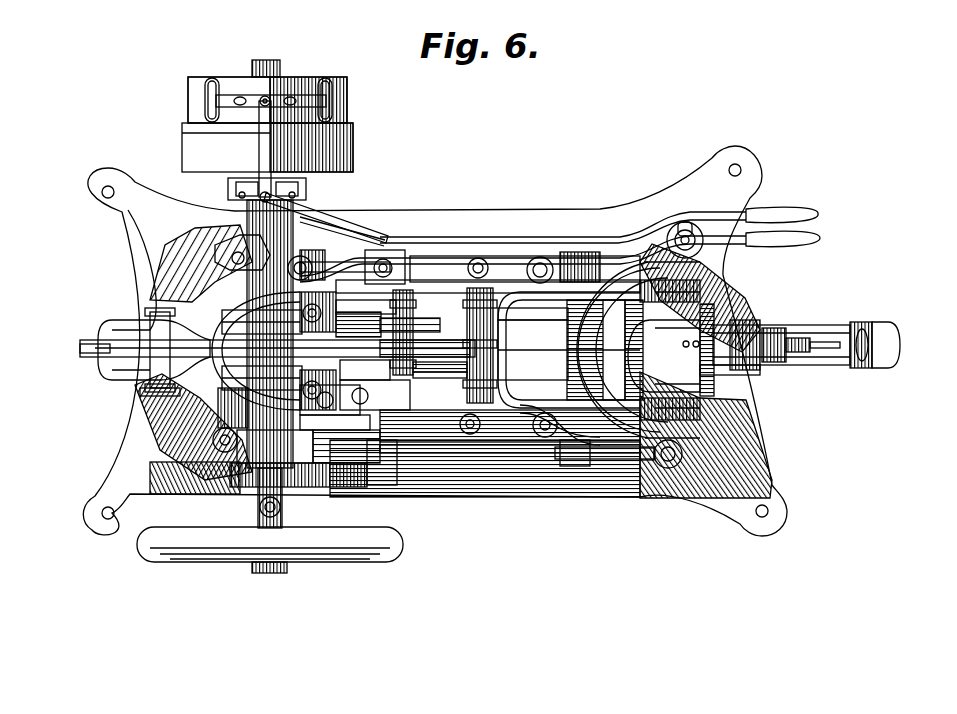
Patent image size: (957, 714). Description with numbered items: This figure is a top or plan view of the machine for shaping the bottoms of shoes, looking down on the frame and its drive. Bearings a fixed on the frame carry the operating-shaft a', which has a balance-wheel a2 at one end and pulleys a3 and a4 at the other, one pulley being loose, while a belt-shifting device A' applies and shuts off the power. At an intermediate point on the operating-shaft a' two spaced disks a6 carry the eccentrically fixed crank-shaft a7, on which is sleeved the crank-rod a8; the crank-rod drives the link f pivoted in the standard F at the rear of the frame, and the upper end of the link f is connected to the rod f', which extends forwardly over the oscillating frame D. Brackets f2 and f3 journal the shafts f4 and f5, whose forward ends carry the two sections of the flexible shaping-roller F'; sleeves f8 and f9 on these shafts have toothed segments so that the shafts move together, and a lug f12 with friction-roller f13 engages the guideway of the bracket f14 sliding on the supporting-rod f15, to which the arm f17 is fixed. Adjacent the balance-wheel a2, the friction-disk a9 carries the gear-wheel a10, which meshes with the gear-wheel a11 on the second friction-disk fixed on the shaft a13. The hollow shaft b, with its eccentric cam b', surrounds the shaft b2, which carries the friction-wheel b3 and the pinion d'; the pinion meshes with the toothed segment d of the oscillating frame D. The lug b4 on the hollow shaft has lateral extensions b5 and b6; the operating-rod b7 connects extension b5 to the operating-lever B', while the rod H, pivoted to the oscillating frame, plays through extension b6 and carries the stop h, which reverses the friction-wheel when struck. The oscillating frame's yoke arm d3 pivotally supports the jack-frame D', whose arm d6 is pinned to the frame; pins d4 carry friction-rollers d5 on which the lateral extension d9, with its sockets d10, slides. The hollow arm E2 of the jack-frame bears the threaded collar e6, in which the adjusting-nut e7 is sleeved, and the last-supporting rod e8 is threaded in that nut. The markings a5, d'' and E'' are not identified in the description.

The bearings a is at (435, 341).
The belt-shifting device A' is at (283, 91).
The pulley a4 is at (186, 88).
The pulley a3 is at (182, 143).
The operating-shaft a' is at (287, 348).
The balance-wheel a2 is at (345, 578).
The shaft b2 is at (320, 276).
The link f is at (261, 353).
The standard F is at (148, 338).
The crank-shaft a7 is at (140, 390).
The disks a6 is at (232, 385).
The hollow shaft b is at (267, 298).
The crank-rod a8 is at (266, 320).
The lower bearing a5 is at (248, 346).
The arm f17 is at (240, 257).
The bracket f14 is at (412, 272).
The friction-roller f13 is at (440, 268).
The supporting-rod f15 is at (388, 266).
The pinion d' is at (488, 234).
The lug f12 is at (432, 284).
The bracket f3 is at (512, 270).
The toothed segment d is at (388, 316).
The bracket f2 is at (365, 357).
The sleeve f9 is at (413, 332).
The rod f' is at (470, 345).
The lateral extension b6 is at (378, 375).
The sleeve f8 is at (430, 372).
The shaft f4 is at (452, 372).
The oscillating frame D is at (569, 350).
The flexible shaping-roller F' is at (579, 350).
The shaft f5 is at (520, 326).
The flywheel rim d'' is at (690, 356).
The friction-rollers d5 is at (700, 300).
The pins d4 is at (702, 318).
The lateral extension d9 is at (706, 334).
The clevis E'' is at (664, 356).
The hollow arm E2 is at (728, 372).
The openings or sockets d10 is at (772, 338).
The threaded collar e6 is at (792, 340).
The adjusting-nut e7 is at (796, 358).
The last-supporting rod e8 is at (826, 350).
The arm d3 is at (866, 326).
The arm d6 is at (866, 362).
The jack-frame D' is at (897, 345).
The eccentric cam b' is at (298, 458).
The friction-wheel b3 is at (346, 446).
The lug b4 is at (335, 438).
The stop h is at (312, 470).
The friction-disk a9 is at (240, 456).
The gear-wheel a10 is at (266, 456).
The shaft a13 is at (356, 476).
The gear-wheel a11 is at (386, 482).
The rod H is at (400, 410).
The lateral extension b5 is at (420, 412).
The operating-rod b7 is at (460, 415).
The operating-lever B' is at (618, 480).